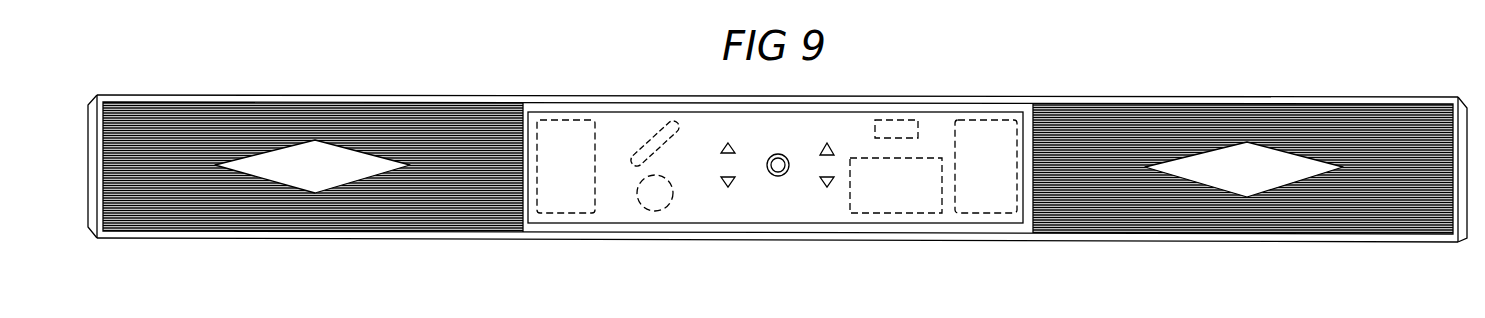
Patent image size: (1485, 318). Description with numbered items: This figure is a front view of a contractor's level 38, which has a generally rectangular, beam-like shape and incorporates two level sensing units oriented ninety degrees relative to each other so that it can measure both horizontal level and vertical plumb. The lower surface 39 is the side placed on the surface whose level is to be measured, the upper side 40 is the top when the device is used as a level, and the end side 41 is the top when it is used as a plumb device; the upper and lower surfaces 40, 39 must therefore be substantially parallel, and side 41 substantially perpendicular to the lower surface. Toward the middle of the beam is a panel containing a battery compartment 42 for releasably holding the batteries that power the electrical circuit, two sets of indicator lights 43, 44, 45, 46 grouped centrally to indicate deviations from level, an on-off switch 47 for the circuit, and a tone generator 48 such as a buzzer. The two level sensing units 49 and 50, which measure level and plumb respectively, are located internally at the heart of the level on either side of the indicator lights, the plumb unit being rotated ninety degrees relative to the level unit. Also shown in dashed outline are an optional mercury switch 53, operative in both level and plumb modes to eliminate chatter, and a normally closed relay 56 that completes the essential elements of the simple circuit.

The level 38 is at (1177, 138).
The surface 39 is at (368, 240).
The side 40 is at (380, 95).
The side 41 is at (88, 133).
The battery compartment 42 is at (560, 137).
The indicator light 43 is at (728, 188).
The indicator light 44 is at (728, 143).
The indicator light 45 is at (827, 143).
The indicator light 46 is at (827, 188).
The on-off switch 47 is at (778, 177).
The tone generator 48 is at (655, 202).
The level sensing unit 49 is at (915, 201).
The level sensing unit 50 is at (987, 147).
The mercury switch 53 is at (656, 137).
The relay 56 is at (895, 120).